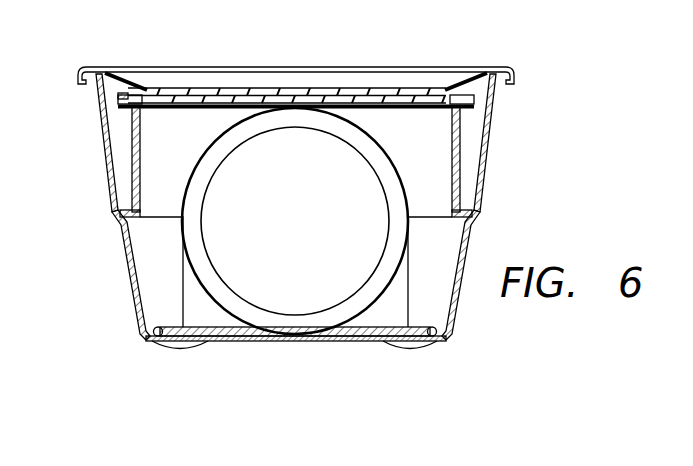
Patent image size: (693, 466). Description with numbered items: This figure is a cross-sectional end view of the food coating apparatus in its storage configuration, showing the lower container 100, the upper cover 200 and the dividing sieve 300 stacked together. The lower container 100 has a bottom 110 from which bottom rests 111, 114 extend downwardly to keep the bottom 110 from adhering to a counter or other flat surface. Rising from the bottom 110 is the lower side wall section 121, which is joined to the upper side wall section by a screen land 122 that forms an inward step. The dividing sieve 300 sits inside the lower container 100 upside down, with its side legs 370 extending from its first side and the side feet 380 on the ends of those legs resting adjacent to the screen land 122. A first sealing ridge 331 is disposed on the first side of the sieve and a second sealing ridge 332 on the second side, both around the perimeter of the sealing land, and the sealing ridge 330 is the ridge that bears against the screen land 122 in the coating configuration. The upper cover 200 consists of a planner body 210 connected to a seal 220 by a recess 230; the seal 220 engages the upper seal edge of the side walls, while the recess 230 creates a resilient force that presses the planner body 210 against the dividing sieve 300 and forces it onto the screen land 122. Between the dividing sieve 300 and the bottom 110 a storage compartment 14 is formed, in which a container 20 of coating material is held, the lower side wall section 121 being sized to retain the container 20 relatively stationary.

The storage compartment 14 is at (181, 149).
The container of material 20 is at (310, 232).
The lower container 100 is at (326, 241).
The bottom 110 is at (263, 343).
The bottom rest 111 is at (182, 348).
The bottom rest 114 is at (407, 350).
The lower side wall section 121 is at (132, 265).
The screen land 122 is at (423, 216).
The upper cover 200 is at (303, 45).
The planner body 210 is at (231, 86).
The seal 220 is at (496, 67).
The recess 230 is at (128, 67).
The dividing sieve 300 is at (291, 151).
The sealing ridge 330 is at (492, 112).
The first sealing ridge 331 is at (124, 108).
The second sealing ridge 332 is at (100, 92).
The side leg 370 is at (133, 182).
The side foot 380 is at (470, 214).